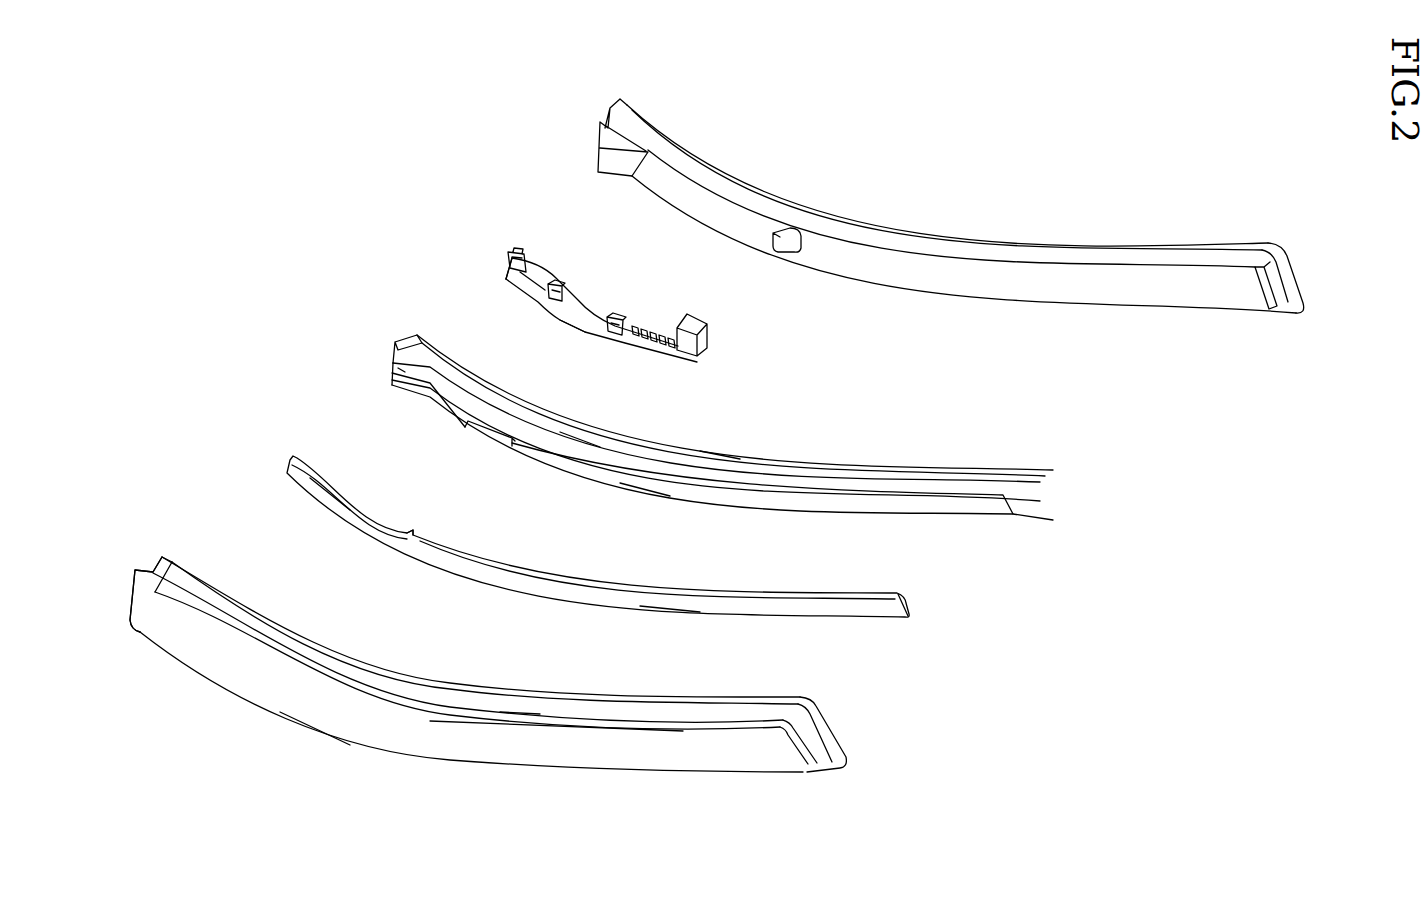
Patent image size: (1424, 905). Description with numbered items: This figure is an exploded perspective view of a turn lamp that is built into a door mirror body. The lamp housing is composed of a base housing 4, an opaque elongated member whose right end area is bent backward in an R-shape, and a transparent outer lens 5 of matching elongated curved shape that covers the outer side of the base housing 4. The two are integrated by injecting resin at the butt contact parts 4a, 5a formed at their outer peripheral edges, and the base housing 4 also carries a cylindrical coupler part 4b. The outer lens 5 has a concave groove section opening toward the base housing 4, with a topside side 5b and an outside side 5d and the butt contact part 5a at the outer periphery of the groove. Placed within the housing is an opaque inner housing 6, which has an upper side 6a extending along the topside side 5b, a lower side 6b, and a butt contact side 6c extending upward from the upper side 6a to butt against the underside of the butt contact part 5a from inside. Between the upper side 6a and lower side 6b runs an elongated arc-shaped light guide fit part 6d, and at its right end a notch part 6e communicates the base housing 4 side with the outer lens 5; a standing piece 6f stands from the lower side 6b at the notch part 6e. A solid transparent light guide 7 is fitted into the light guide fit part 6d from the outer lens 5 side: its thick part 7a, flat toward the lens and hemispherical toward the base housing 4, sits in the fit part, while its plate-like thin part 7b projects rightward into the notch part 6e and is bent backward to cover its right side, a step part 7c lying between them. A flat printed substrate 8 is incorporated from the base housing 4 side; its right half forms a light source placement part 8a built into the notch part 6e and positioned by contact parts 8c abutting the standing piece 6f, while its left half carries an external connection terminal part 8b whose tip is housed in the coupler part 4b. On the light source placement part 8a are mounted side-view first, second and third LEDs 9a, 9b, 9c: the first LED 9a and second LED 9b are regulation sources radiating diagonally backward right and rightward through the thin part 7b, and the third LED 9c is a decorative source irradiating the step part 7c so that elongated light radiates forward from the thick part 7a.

The base housing 4 is at (908, 210).
The butt contact part 4a is at (1050, 256).
The coupler part 4b is at (782, 253).
The outer lens 5 is at (369, 659).
The butt contact part 5a is at (520, 710).
The topside side 5b is at (160, 580).
The outside side 5d is at (320, 718).
The inner housing 6 is at (977, 444).
The upper side 6a is at (583, 450).
The lower side 6b is at (642, 496).
The butt contact side 6c is at (720, 457).
The light guide fit part 6d is at (848, 500).
The notch part 6e is at (433, 406).
The standing piece 6f is at (470, 432).
The light guide 7 is at (508, 553).
The thick part 7a is at (675, 598).
The thin part 7b is at (332, 508).
The step part 7c is at (410, 531).
The substrate 8 is at (594, 288).
The light source placement part 8a is at (530, 292).
The external connection terminal part 8b is at (708, 340).
The contact part 8c is at (506, 279).
The first LED 9a is at (515, 250).
The second LED 9b is at (556, 282).
The third LED 9c is at (618, 314).